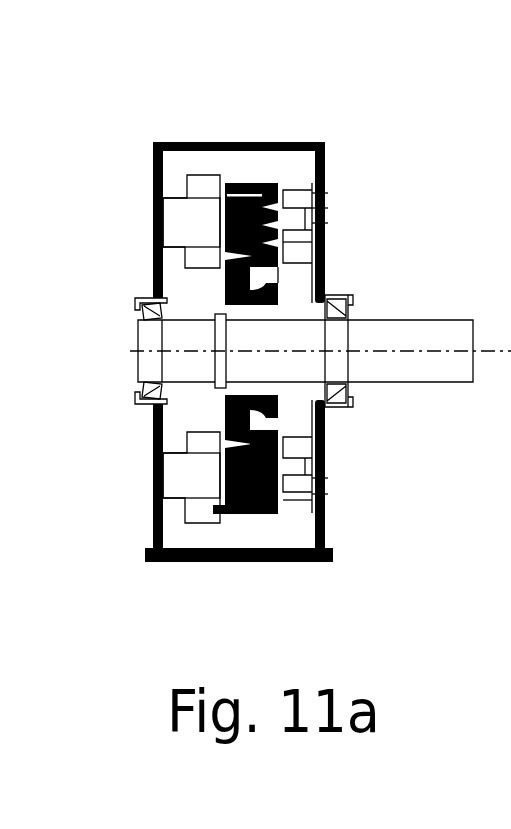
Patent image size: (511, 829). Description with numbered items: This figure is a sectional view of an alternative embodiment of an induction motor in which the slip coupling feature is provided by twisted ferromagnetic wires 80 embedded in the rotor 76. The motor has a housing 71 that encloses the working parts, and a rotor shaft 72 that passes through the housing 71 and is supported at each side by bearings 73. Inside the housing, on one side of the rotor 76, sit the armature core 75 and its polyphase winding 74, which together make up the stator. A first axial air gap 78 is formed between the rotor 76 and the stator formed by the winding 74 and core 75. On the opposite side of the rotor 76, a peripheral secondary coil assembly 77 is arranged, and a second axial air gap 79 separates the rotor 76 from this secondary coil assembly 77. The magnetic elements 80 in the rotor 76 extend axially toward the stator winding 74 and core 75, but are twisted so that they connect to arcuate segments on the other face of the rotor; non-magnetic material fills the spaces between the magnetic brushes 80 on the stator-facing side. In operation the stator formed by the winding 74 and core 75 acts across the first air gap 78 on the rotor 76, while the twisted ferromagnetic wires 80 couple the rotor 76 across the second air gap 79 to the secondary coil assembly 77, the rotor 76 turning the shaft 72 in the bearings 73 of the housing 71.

The housing 71 is at (325, 182).
The rotor shaft 72 is at (397, 322).
The bearings 73 is at (352, 295).
The polyphase winding 74 is at (181, 178).
The armature core 75 is at (193, 227).
The rotor 76 is at (244, 173).
The secondary coil assembly 77 is at (323, 227).
The first axial air gap 78 is at (220, 521).
The second axial air gap 79 is at (291, 178).
The twisted ferromagnetic wires 80 is at (278, 513).